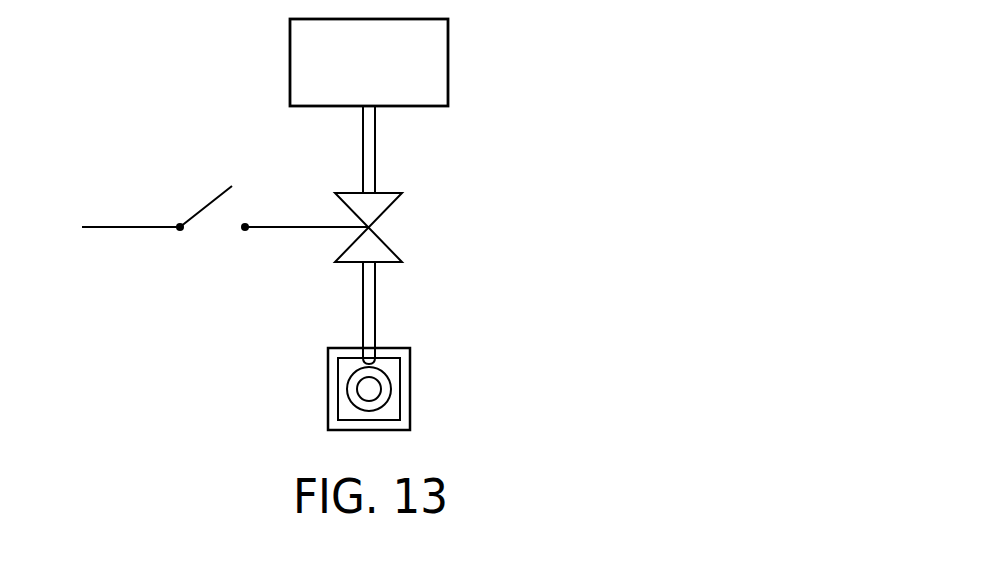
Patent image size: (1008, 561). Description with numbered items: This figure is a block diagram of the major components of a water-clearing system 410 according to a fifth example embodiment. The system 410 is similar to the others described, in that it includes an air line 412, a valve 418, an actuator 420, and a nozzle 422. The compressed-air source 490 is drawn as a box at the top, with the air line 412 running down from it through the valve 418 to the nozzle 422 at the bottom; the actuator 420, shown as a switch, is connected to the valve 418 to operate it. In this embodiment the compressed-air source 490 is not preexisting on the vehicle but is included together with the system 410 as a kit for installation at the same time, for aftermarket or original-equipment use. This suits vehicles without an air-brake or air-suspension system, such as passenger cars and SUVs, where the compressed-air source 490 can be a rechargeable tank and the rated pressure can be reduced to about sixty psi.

The water-clearing system 410 is at (578, 210).
The air line 412 is at (394, 142).
The valve 418 is at (402, 230).
The actuator 420 is at (162, 263).
The nozzle 422 is at (397, 362).
The compressed-air source 490 is at (278, 80).